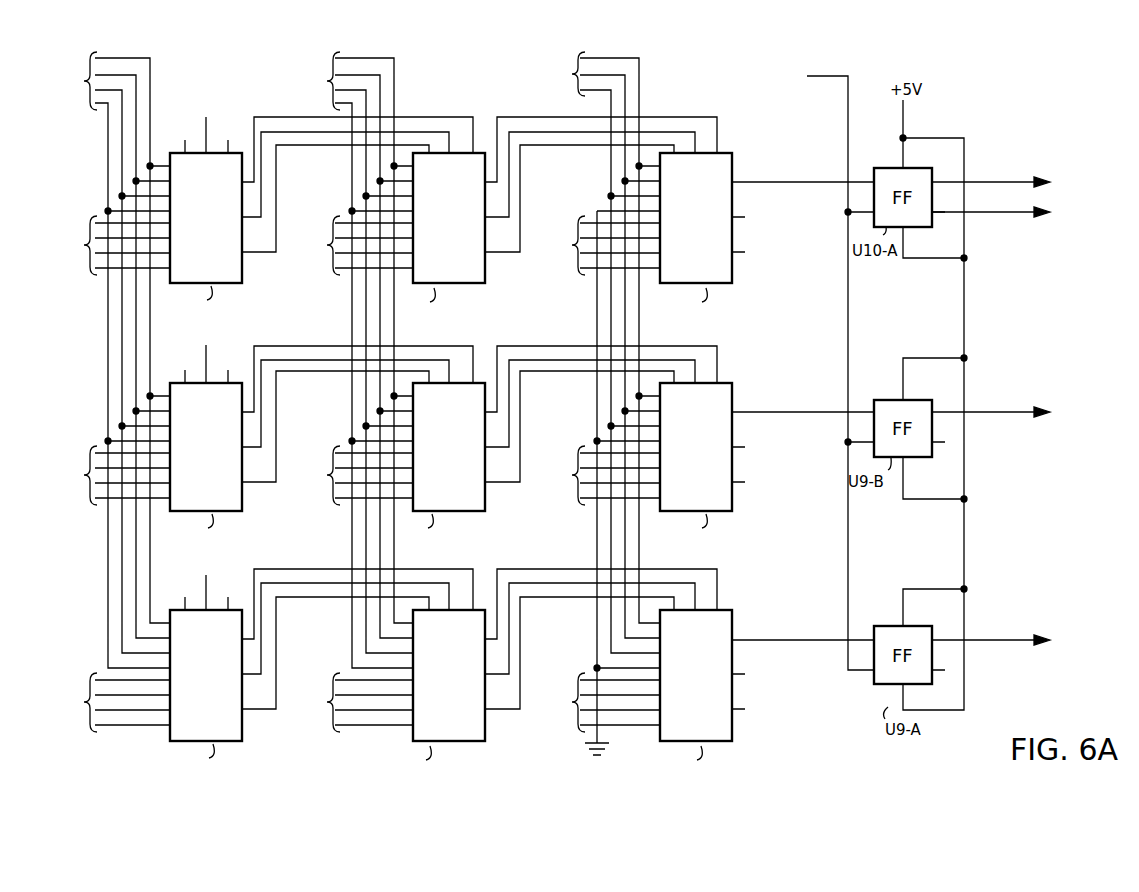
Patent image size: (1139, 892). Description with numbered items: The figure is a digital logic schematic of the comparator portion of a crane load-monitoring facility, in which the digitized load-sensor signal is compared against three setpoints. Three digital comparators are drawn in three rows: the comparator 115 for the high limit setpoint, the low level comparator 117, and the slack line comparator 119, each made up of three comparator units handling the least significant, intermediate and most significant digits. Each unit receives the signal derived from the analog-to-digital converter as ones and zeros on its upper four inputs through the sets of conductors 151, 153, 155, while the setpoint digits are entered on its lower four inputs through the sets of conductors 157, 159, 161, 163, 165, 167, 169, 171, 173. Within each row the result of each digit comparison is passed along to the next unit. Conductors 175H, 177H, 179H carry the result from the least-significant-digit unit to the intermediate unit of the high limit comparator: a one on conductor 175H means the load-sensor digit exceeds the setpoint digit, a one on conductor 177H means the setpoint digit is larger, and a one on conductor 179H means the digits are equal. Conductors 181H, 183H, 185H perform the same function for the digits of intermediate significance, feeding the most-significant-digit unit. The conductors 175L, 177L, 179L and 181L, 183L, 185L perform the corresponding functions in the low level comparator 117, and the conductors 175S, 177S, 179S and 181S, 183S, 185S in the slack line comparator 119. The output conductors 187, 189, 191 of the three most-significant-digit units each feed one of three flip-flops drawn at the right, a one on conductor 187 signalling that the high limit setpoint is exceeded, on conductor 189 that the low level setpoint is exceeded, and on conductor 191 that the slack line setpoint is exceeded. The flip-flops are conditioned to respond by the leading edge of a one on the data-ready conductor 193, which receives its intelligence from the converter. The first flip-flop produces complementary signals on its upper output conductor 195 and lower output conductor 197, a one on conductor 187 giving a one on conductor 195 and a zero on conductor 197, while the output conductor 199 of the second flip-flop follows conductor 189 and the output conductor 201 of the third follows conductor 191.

The set of conductors 151 is at (112, 360).
The set of conductors 153 is at (354, 360).
The set of conductors 155 is at (601, 403).
The set of conductors 157 is at (110, 245).
The set of conductors 159 is at (354, 245).
The set of conductors 161 is at (601, 245).
The set of conductors 163 is at (111, 475).
The set of conductors 165 is at (355, 475).
The set of conductors 167 is at (602, 475).
The set of conductors 169 is at (111, 702).
The set of conductors 171 is at (356, 702).
The set of conductors 173 is at (602, 702).
The conductor 175H is at (404, 116).
The conductor 177H is at (428, 131).
The conductor 179H is at (431, 145).
The conductor 181H is at (718, 142).
The conductor 183H is at (672, 133).
The conductor 185H is at (648, 143).
The conductor 175L is at (262, 344).
The conductor 177L is at (305, 359).
The conductor 179L is at (288, 372).
The conductor 181L is at (682, 346).
The conductor 183L is at (690, 358).
The conductor 185L is at (674, 376).
The conductor 175S is at (262, 567).
The conductor 177S is at (305, 582).
The conductor 179S is at (327, 598).
The conductor 181S is at (681, 568).
The conductor 183S is at (690, 583).
The conductor 185S is at (675, 602).
The comparator 115 is at (476, 310).
The comparator 117 is at (476, 538).
The comparator 119 is at (479, 770).
The output conductor 187 is at (803, 188).
The output conductor 189 is at (803, 418).
The output conductor 191 is at (790, 646).
The data-ready conductor 193 is at (848, 296).
The upper output conductor 195 is at (1003, 182).
The lower output conductor 197 is at (1002, 215).
The output conductor 199 is at (1006, 410).
The output conductor 201 is at (1012, 638).